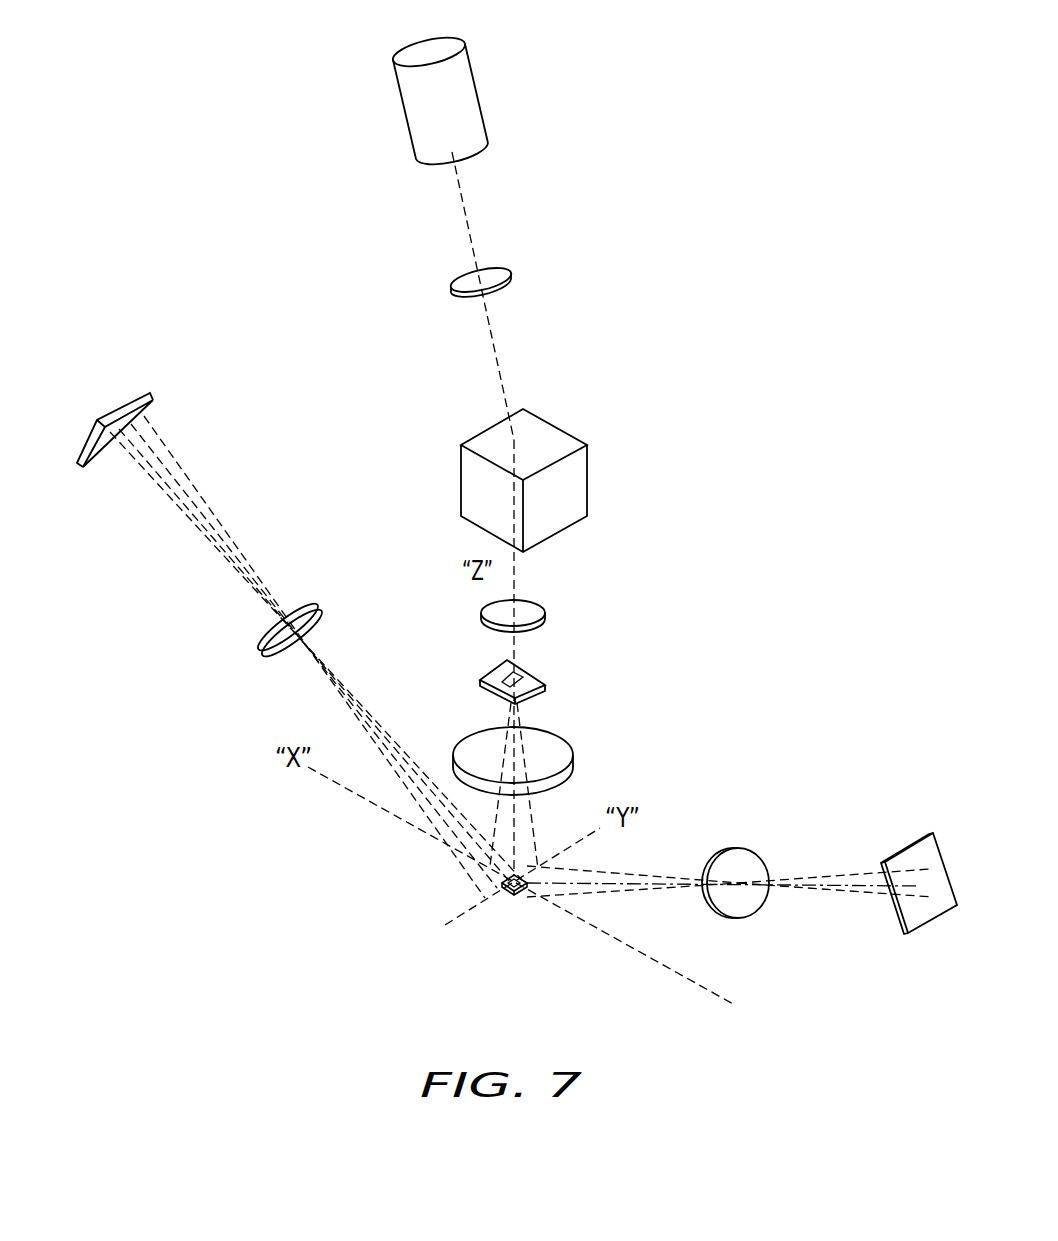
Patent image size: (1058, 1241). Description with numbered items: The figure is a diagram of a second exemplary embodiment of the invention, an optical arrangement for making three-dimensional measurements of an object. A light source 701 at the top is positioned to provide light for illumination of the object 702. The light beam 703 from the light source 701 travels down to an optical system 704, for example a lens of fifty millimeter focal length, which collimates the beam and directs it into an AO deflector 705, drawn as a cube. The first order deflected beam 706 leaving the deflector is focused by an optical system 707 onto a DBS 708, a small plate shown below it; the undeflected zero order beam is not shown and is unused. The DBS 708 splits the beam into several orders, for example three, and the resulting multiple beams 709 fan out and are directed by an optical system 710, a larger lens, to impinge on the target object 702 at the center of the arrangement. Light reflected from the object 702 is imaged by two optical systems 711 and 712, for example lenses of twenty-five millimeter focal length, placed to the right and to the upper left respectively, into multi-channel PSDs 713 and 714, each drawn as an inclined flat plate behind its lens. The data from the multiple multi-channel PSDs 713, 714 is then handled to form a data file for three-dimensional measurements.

The light source 701 is at (412, 45).
The object 702 is at (520, 893).
The light beam 703 is at (465, 216).
The optical system 704 is at (478, 273).
The AO deflector 705 is at (557, 432).
The first order deflected beam 706 is at (516, 578).
The optical system 707 is at (546, 623).
The DBS 708 is at (545, 685).
The multiple beams 709 is at (535, 786).
The optical system 710 is at (555, 732).
The optical system 711 is at (710, 852).
The optical system 712 is at (322, 613).
The multi-channel PSD 713 is at (908, 845).
The multi-channel PSD 714 is at (150, 408).